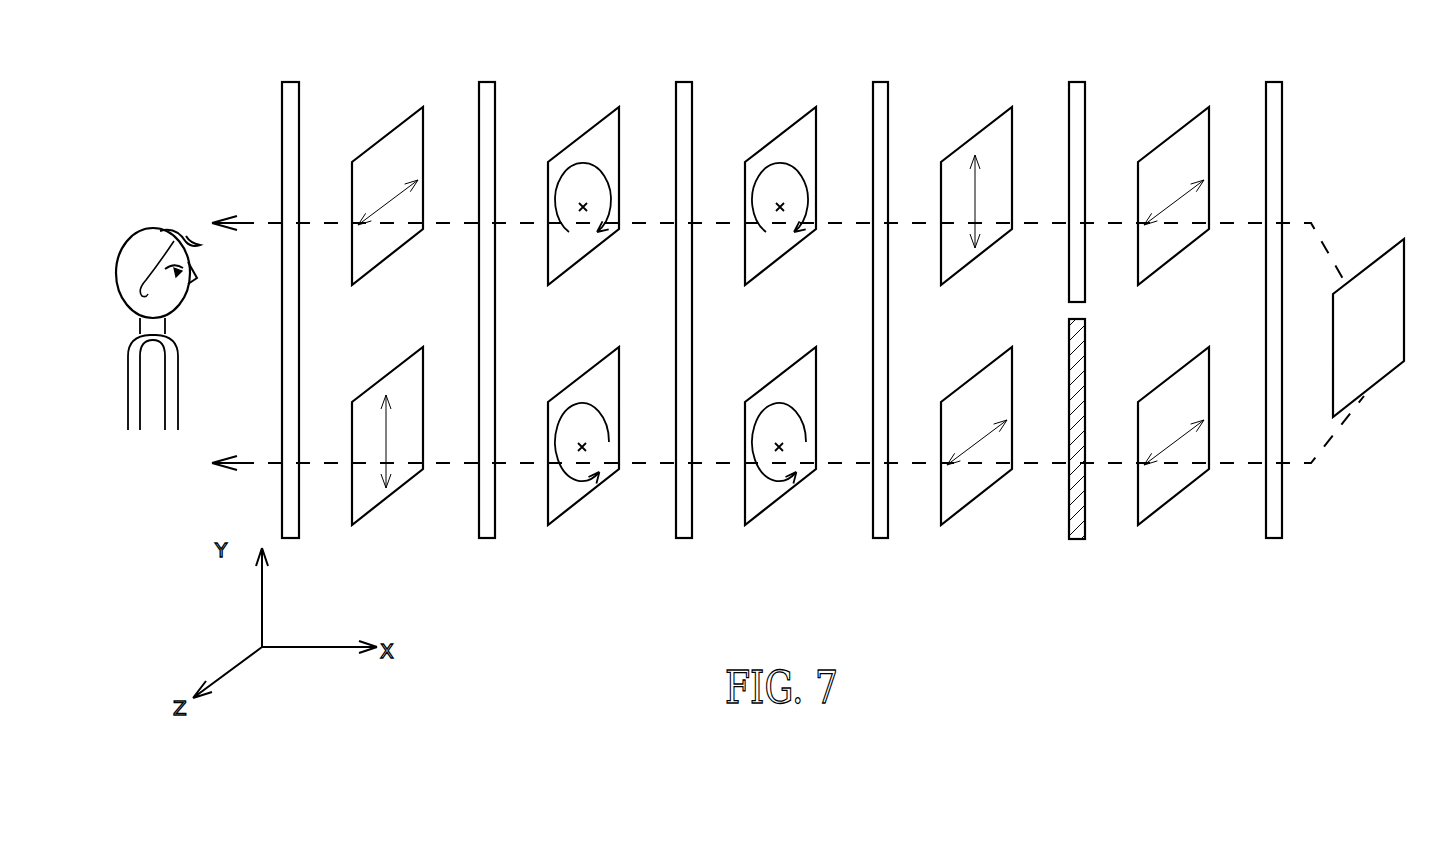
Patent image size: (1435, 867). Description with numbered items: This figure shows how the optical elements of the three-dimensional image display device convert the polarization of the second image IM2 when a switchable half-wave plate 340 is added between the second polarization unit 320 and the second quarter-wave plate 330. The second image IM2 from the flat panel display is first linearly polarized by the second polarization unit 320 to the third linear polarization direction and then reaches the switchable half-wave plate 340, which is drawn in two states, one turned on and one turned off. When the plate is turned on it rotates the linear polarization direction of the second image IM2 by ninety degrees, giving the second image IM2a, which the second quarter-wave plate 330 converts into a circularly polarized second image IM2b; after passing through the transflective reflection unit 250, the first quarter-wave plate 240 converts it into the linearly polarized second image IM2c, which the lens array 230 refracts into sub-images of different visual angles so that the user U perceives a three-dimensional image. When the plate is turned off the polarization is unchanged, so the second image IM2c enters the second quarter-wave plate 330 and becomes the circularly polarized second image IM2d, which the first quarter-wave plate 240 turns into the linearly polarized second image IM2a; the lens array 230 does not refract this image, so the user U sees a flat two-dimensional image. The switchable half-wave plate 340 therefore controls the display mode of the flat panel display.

The lens array 230 is at (290, 82).
The first quarter-wave plate 240 is at (487, 82).
The reflection unit 250 is at (684, 82).
The second quarter-wave plate 330 is at (881, 82).
The switchable half-wave plate 340 is at (1077, 82).
The second polarization unit 320 is at (1274, 82).
The second image IM2 is at (1363, 274).
The second image having a linear polarization direction IM2a is at (380, 498).
The second image having the second circular polarization direction IM2b is at (576, 258).
The second image having the second linear polarization direction IM2c is at (380, 258).
The second image having the first circular polarization direction IM2d is at (576, 498).
The user U is at (147, 242).